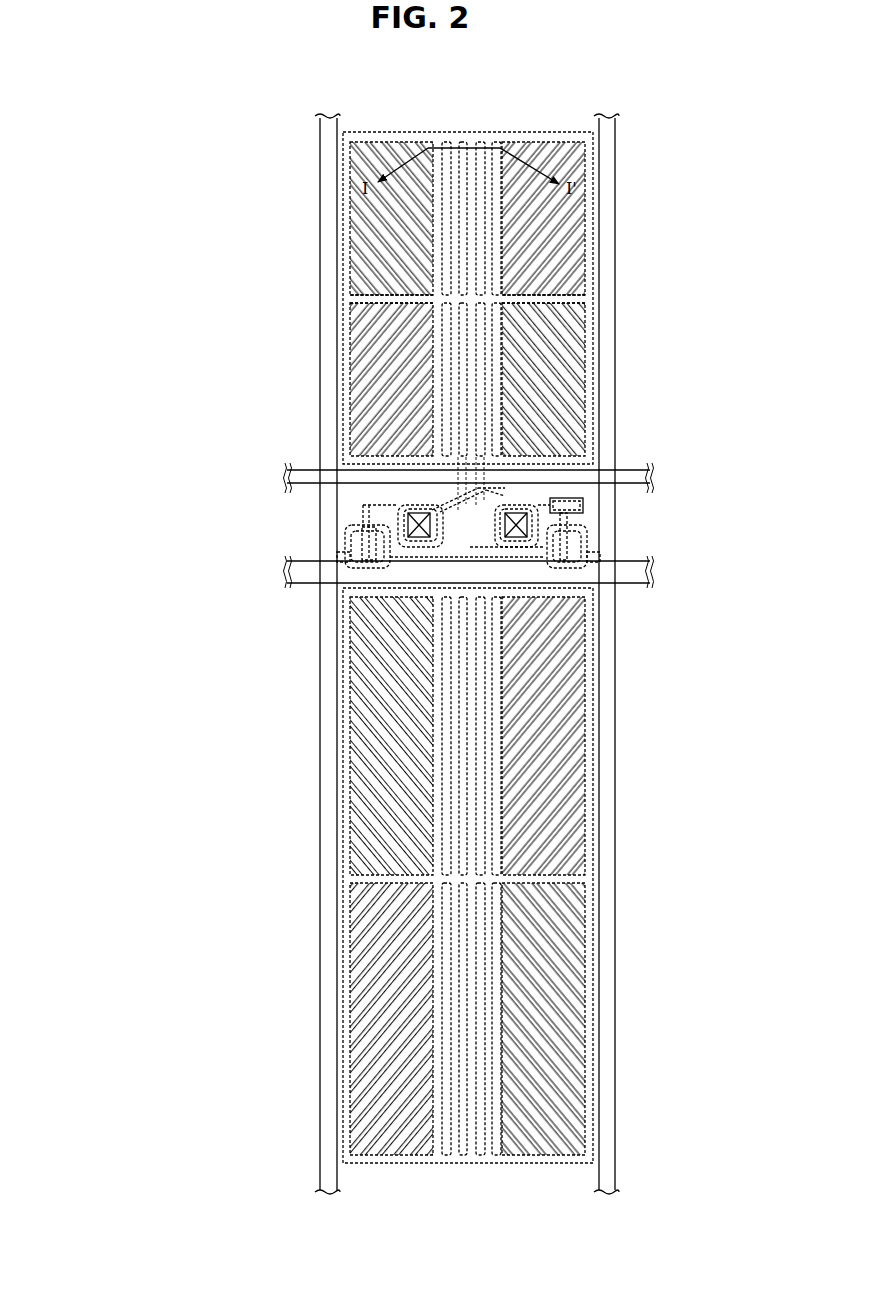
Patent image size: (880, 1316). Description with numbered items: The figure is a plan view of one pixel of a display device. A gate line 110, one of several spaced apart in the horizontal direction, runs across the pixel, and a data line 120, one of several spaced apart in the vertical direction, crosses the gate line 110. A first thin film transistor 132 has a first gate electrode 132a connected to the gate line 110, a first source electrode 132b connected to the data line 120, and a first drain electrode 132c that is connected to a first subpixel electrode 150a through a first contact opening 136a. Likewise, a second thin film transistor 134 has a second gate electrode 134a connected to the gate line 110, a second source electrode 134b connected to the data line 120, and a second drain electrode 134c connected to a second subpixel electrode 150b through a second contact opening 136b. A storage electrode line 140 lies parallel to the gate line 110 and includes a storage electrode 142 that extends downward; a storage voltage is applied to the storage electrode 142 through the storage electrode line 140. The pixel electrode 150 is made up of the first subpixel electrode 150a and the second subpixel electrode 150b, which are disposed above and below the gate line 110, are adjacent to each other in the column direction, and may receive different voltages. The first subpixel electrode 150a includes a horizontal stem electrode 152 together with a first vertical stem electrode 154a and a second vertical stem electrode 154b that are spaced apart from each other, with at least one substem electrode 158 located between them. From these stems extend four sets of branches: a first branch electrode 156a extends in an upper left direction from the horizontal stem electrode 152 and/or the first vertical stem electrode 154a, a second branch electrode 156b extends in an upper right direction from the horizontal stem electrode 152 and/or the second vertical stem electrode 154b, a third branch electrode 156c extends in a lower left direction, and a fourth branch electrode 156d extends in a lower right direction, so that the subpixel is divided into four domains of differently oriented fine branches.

The gate line 110 is at (628, 578).
The data line 120 is at (320, 240).
The first thin film transistor 132 is at (286, 520).
The first gate electrode 132a is at (345, 535).
The first source electrode 132b is at (368, 566).
The first drain electrode 132c is at (363, 508).
The second thin film transistor 134 is at (650, 509).
The second gate electrode 134a is at (587, 545).
The second source electrode 134b is at (612, 560).
The second drain electrode 134c is at (583, 522).
The first contact opening 136a is at (415, 512).
The second contact opening 136b is at (518, 512).
The storage electrode line 140 is at (285, 471).
The storage electrode 142 is at (575, 505).
The pixel electrode 150 is at (366, 624).
The first subpixel electrode 150a is at (389, 275).
The second subpixel electrode 150b is at (345, 653).
The horizontal stem electrode 152 is at (575, 297).
The first vertical stem electrode 154a is at (438, 158).
The second vertical stem electrode 154b is at (497, 158).
The first branch electrode 156a is at (380, 160).
The second branch electrode 156b is at (547, 158).
The third branch electrode 156c is at (386, 366).
The fourth branch electrode 156d is at (550, 375).
The substem electrode 158 is at (476, 147).